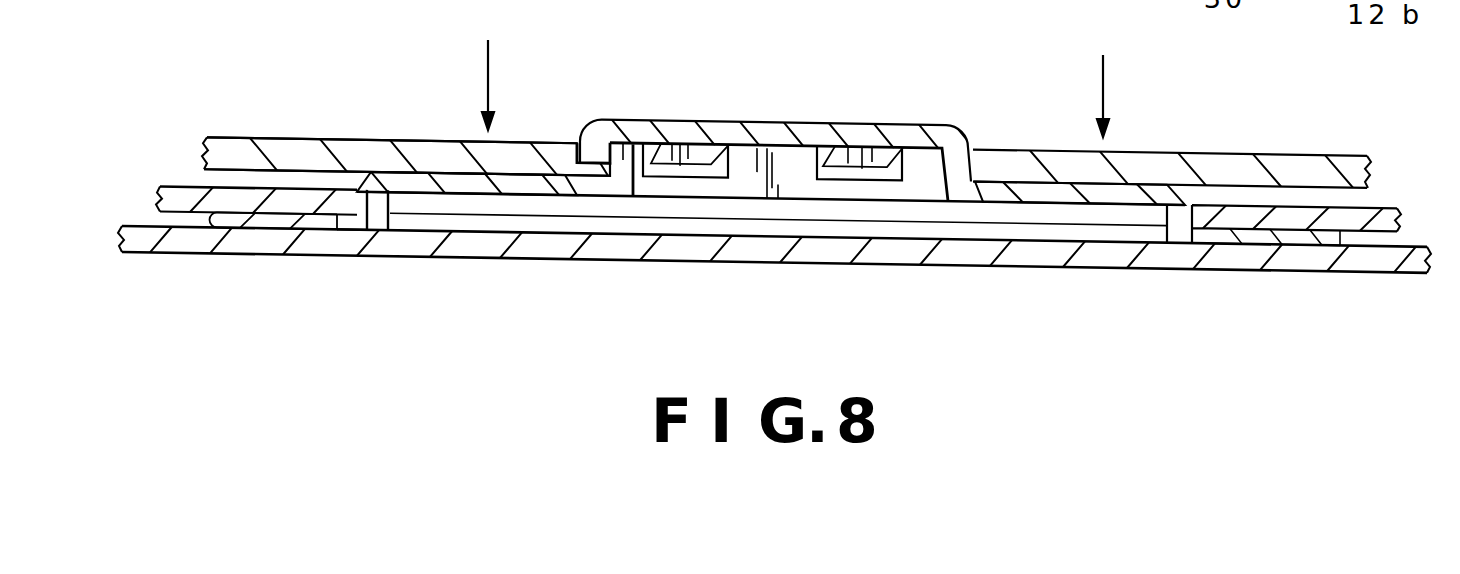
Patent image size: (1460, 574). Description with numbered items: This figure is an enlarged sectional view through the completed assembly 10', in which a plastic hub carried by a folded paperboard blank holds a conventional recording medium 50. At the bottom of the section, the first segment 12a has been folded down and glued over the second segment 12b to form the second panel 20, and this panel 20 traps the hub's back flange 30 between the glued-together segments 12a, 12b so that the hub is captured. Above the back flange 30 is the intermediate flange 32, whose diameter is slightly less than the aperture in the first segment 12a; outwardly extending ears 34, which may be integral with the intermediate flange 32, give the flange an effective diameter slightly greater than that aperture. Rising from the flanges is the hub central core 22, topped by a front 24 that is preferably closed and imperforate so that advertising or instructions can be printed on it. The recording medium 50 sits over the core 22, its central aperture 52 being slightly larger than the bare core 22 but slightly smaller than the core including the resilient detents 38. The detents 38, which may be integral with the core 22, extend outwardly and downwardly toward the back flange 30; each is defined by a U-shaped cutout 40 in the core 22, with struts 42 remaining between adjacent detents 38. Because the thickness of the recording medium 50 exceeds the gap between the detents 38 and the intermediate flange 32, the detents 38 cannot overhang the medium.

The assembly 10' is at (407, 98).
The first segment 12a is at (183, 197).
The second segment 12b is at (173, 243).
The second panel 20 is at (1436, 287).
The central core 22 is at (940, 124).
The front 24 is at (853, 122).
The back flange 30 is at (287, 222).
The intermediate flange 32 is at (1197, 197).
The ears 34 is at (377, 190).
The resilient detents 38 is at (580, 124).
The U-shaped cutout 40 is at (737, 123).
The struts 42 is at (623, 158).
The recording medium 50 is at (362, 140).
The central aperture 52 is at (580, 165).